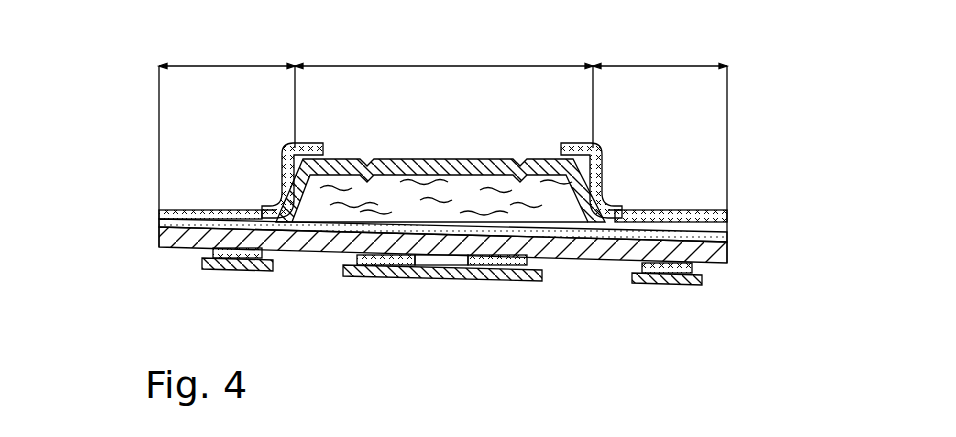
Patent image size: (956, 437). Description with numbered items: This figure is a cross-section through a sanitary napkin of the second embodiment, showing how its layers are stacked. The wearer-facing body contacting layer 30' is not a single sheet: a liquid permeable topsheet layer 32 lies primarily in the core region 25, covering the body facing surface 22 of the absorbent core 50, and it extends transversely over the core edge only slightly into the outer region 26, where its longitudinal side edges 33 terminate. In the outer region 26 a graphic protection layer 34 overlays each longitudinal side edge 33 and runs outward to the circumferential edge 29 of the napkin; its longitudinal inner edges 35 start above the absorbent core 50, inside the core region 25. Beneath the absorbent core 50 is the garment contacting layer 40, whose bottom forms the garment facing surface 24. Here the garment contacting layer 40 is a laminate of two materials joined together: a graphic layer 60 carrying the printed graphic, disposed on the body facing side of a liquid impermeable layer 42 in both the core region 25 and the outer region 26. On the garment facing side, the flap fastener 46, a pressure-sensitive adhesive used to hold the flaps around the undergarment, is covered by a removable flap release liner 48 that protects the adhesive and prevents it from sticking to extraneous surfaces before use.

The body facing surface 22 is at (401, 141).
The garment facing surface 24 is at (443, 295).
The core region 25 is at (443, 64).
The outer region 26 is at (232, 64).
The circumferential edge 29 is at (150, 208).
The body contacting layer 30' is at (447, 149).
The liquid permeable topsheet layer 32 is at (421, 158).
The longitudinal side edges 33 is at (249, 207).
The graphic protection layer 34 is at (201, 208).
The longitudinal inner edges 35 is at (327, 151).
The garment contacting layer 40 is at (443, 262).
The liquid impermeable layer 42 is at (730, 255).
The flap fastener 46 is at (203, 251).
The flap release liner 48 is at (232, 271).
The absorbent core 50 is at (470, 190).
The graphic layer 60 is at (730, 240).